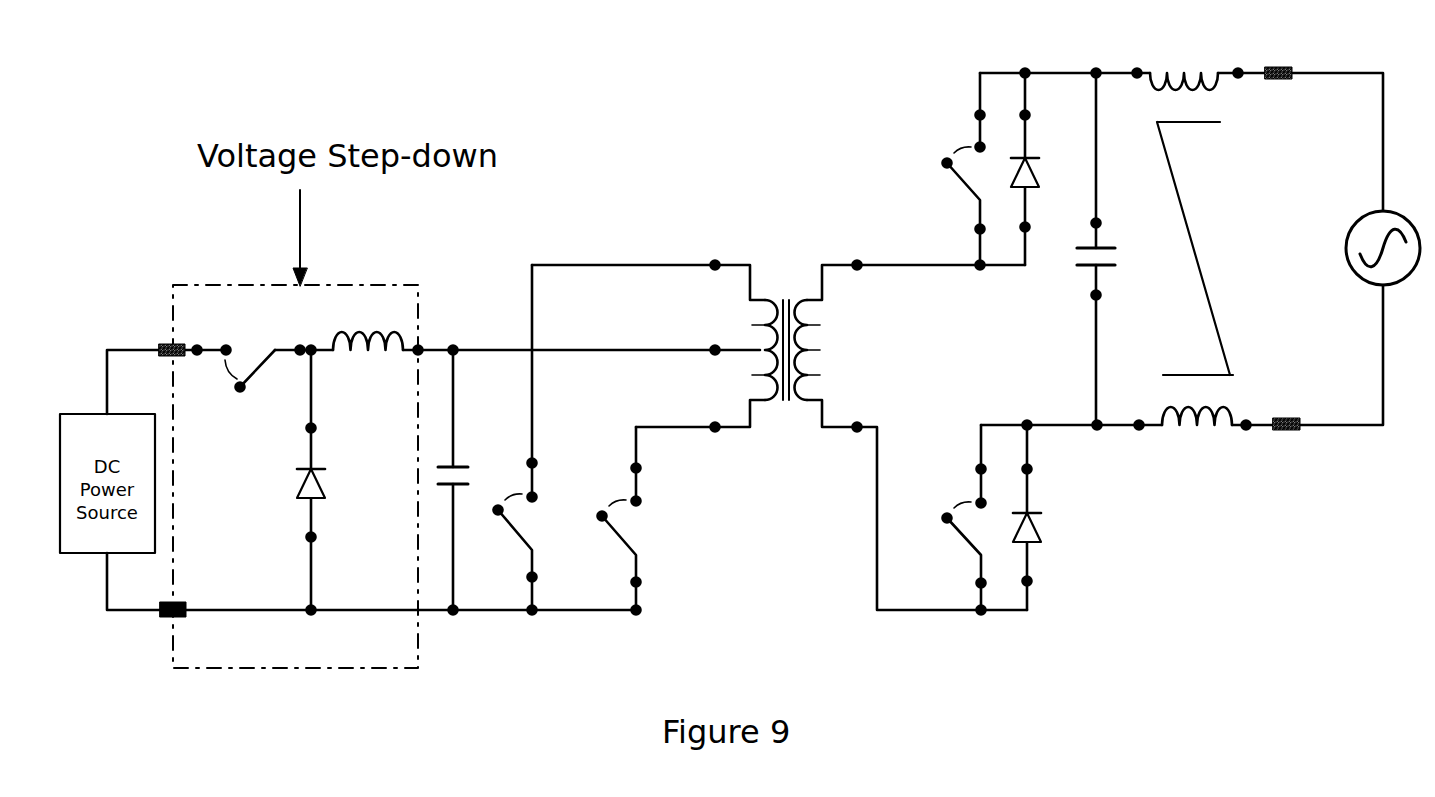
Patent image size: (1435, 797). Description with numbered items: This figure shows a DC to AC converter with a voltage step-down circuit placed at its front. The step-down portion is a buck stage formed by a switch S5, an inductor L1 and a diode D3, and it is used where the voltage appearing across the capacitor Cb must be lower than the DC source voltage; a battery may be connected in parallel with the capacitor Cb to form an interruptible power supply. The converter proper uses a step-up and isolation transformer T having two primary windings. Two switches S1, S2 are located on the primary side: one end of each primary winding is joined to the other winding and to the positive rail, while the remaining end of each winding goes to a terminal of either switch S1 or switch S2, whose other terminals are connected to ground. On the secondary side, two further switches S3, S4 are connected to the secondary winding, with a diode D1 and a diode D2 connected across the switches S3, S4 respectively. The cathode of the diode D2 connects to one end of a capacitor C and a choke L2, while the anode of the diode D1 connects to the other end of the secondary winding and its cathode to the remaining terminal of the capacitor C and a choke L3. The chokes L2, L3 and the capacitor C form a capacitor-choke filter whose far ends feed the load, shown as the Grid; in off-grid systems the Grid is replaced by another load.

The switch S5 is at (250, 382).
The inductor L1 is at (368, 356).
The diode D3 is at (332, 480).
The capacitor Cb is at (465, 480).
The switch S1 is at (515, 437).
The switch S2 is at (619, 518).
The step-up and isolation transformer T is at (804, 332).
The switch S4 is at (962, 169).
The diode D2 is at (1043, 169).
The capacitor C is at (1107, 249).
The choke L2 is at (1184, 62).
The choke L3 is at (1197, 433).
The switch S3 is at (964, 517).
The diode D1 is at (1043, 517).
The grid Grid is at (1376, 233).